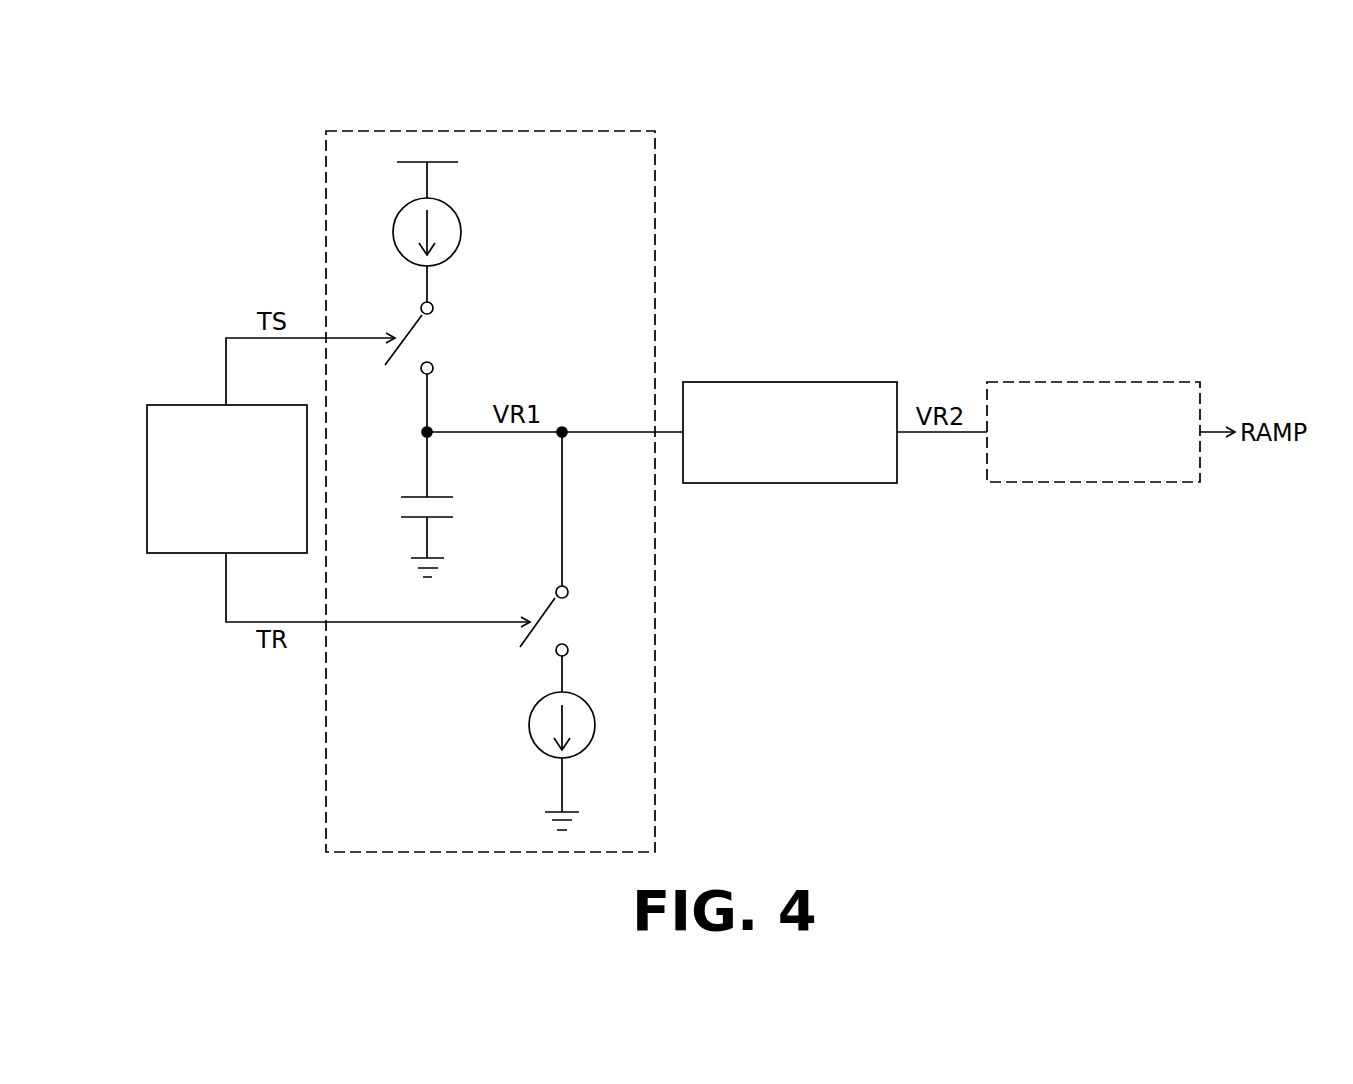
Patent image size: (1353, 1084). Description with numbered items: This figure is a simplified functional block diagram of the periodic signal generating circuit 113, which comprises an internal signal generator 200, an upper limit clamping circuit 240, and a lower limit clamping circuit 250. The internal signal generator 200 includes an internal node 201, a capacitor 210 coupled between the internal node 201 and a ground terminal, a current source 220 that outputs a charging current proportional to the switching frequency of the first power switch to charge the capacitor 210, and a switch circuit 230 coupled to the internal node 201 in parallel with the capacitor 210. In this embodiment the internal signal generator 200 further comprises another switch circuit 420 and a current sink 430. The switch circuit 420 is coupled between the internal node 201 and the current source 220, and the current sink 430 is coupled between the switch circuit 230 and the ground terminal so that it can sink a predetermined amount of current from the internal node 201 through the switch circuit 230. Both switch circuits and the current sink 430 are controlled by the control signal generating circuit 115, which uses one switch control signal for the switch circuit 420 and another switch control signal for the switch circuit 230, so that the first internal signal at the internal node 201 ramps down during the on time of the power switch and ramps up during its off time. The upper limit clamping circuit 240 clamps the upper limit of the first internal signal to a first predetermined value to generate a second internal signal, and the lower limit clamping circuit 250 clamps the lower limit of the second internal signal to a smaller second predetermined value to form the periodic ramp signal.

The periodic signal generating circuit 113 is at (1190, 152).
The internal signal generator 200 is at (490, 131).
The current source 220 is at (462, 232).
The switch circuit 420 is at (422, 338).
The internal node 201 is at (421, 432).
The capacitor 210 is at (447, 507).
The switch circuit 230 is at (555, 622).
The current sink 430 is at (528, 725).
The control signal generating circuit 115 is at (147, 480).
The upper limit clamping circuit 240 is at (790, 382).
The lower limit clamping circuit 250 is at (1092, 382).